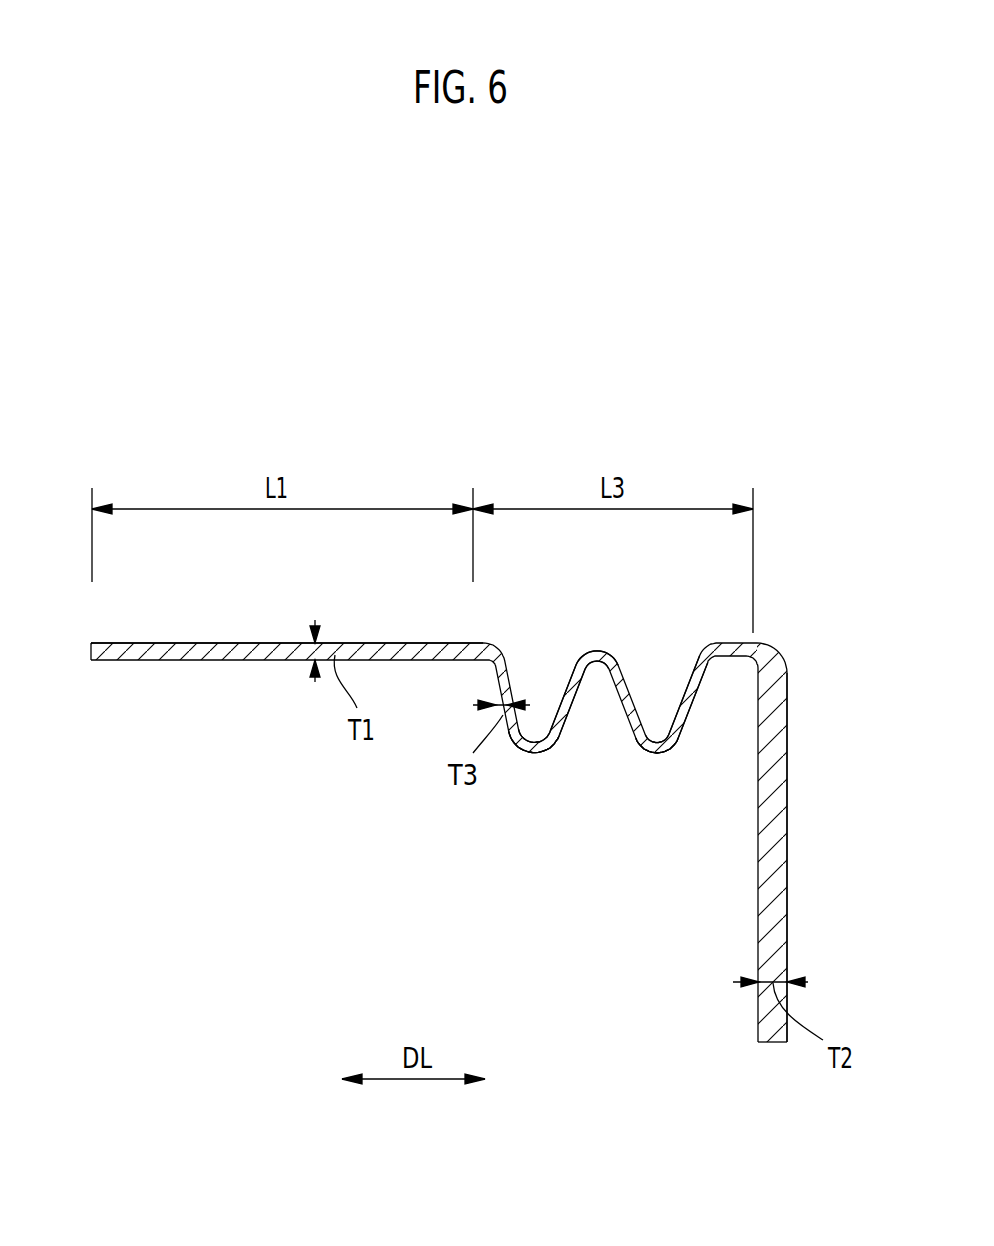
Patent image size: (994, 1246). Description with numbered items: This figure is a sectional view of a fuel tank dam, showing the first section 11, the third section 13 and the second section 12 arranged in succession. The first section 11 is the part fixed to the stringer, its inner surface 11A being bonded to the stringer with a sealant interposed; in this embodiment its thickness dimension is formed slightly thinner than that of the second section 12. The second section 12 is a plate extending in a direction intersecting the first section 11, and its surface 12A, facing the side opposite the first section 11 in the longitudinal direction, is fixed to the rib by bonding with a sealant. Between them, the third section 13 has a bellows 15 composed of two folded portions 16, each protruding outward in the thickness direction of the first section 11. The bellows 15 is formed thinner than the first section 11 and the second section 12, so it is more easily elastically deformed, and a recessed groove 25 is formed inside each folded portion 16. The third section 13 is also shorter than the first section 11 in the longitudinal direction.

The first section 11 is at (182, 660).
The inner surface 11A is at (138, 643).
The second section 12 is at (788, 905).
The surface 12A is at (788, 773).
The third section 13 is at (645, 752).
The bellows 15 is at (596, 820).
The folded portion 16 is at (531, 751).
The recessed groove 25 is at (557, 697).